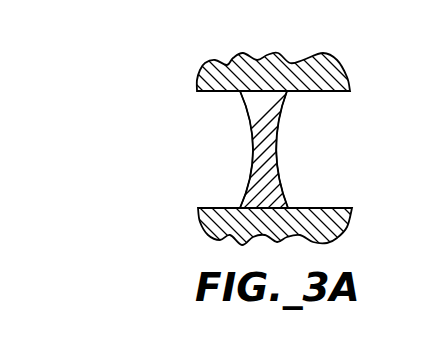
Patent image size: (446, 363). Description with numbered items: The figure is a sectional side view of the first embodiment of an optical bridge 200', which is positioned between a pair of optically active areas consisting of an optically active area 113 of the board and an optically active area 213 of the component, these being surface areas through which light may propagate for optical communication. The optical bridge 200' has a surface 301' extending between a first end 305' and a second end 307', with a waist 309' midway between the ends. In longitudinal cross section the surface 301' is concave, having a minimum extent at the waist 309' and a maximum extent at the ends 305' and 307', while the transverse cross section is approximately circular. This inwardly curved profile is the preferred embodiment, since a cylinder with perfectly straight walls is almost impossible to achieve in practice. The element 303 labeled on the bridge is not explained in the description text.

The interconnect structure 200' is at (233, 165).
The upper pad 307' is at (293, 145).
The lower pad 305' is at (233, 145).
The solder joint 213 is at (270, 94).
The solder material 113 is at (257, 164).
The intermetallic layer 303 is at (254, 160).
The joint sidewall 301' is at (322, 125).
The joint surface 309' is at (322, 179).